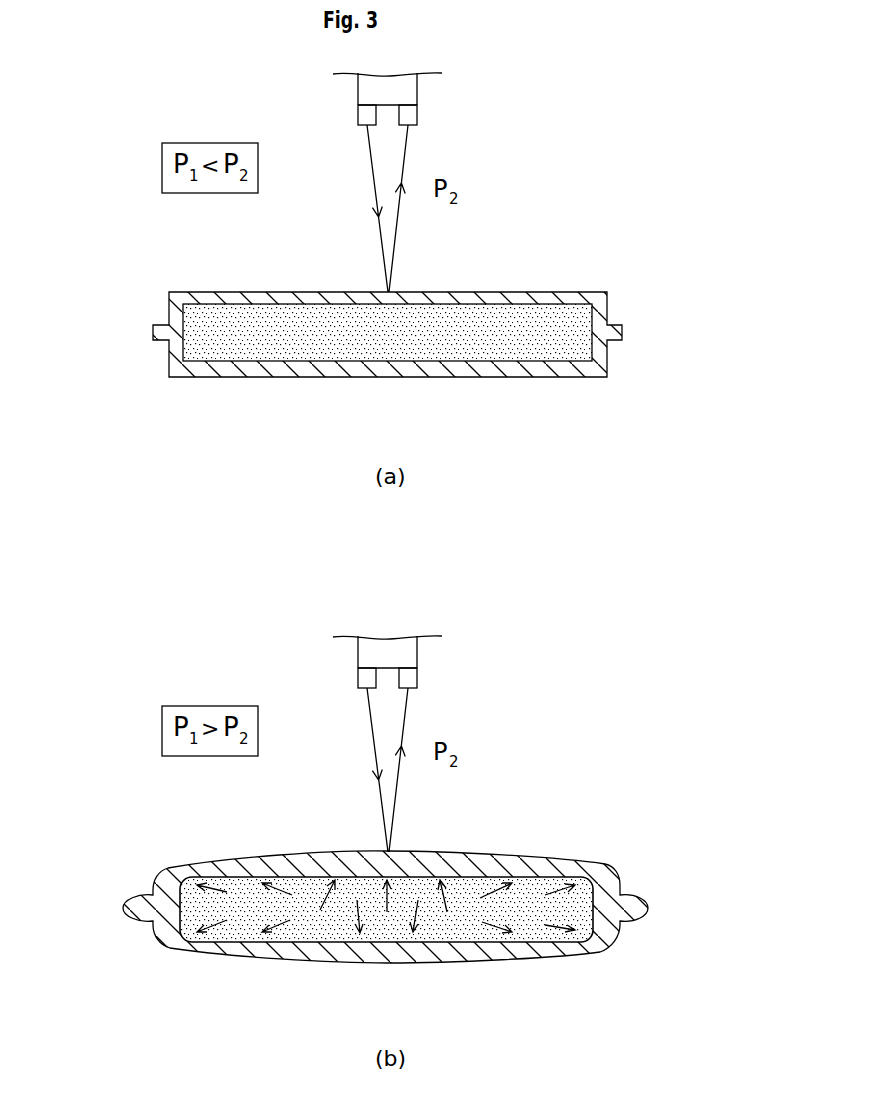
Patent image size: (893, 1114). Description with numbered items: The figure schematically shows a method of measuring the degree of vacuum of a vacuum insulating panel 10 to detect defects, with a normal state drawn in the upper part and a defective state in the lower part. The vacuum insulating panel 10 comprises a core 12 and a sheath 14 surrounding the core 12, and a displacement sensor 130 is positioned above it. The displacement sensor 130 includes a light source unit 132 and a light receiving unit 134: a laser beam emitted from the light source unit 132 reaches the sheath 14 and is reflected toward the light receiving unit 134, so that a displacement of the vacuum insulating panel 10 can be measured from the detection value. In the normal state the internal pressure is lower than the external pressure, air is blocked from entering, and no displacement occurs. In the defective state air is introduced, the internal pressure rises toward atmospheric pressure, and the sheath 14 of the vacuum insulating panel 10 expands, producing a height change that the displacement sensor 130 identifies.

The vacuum insulating panel 10 is at (345, 627).
The core 12 is at (188, 350).
The sheath 14 is at (176, 305).
The displacement sensor 130 is at (447, 389).
The light source unit 132 is at (373, 123).
The light receiving unit 134 is at (412, 112).